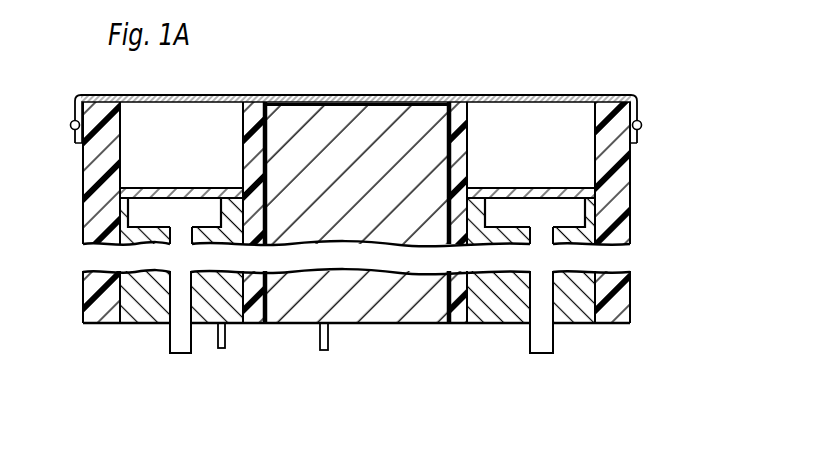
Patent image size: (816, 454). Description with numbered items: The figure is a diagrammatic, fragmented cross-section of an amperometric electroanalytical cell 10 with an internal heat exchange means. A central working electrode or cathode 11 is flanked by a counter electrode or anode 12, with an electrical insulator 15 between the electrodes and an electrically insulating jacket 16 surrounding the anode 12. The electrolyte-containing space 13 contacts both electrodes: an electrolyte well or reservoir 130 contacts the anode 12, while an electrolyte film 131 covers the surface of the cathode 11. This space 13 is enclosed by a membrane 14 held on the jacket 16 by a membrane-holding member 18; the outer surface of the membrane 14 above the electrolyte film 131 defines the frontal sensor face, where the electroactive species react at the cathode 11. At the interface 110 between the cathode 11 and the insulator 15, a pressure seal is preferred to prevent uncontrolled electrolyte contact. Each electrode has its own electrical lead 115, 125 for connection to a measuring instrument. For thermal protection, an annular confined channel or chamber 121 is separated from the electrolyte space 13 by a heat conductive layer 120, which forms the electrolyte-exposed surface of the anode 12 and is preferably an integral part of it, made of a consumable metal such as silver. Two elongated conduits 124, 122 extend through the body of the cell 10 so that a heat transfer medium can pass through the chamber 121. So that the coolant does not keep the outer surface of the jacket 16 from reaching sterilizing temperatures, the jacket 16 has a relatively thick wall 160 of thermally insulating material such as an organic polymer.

The cell 10 is at (609, 70).
The working electrode or cathode 11 is at (413, 120).
The counter electrode or anode 12 is at (139, 311).
The electrolyte-containing space 13 is at (512, 110).
The membrane 14 is at (185, 96).
The electrical insulator 15 is at (263, 102).
The electrically insulating jacket 16 is at (82, 212).
The membrane-holding member 18 is at (72, 123).
The interface 110 is at (449, 193).
The electrical outlet or lead 115 is at (326, 338).
The heat conductive layer 120 is at (497, 189).
The annular confined channel or chamber 121 is at (572, 215).
The elongated conduit 122 is at (538, 346).
The elongated conduit 124 is at (177, 347).
The electrical outlet or lead 125 is at (222, 350).
The electrolyte well or reservoir 130 is at (188, 173).
The electrolyte film 131 is at (338, 97).
The thick wall 160 is at (612, 226).